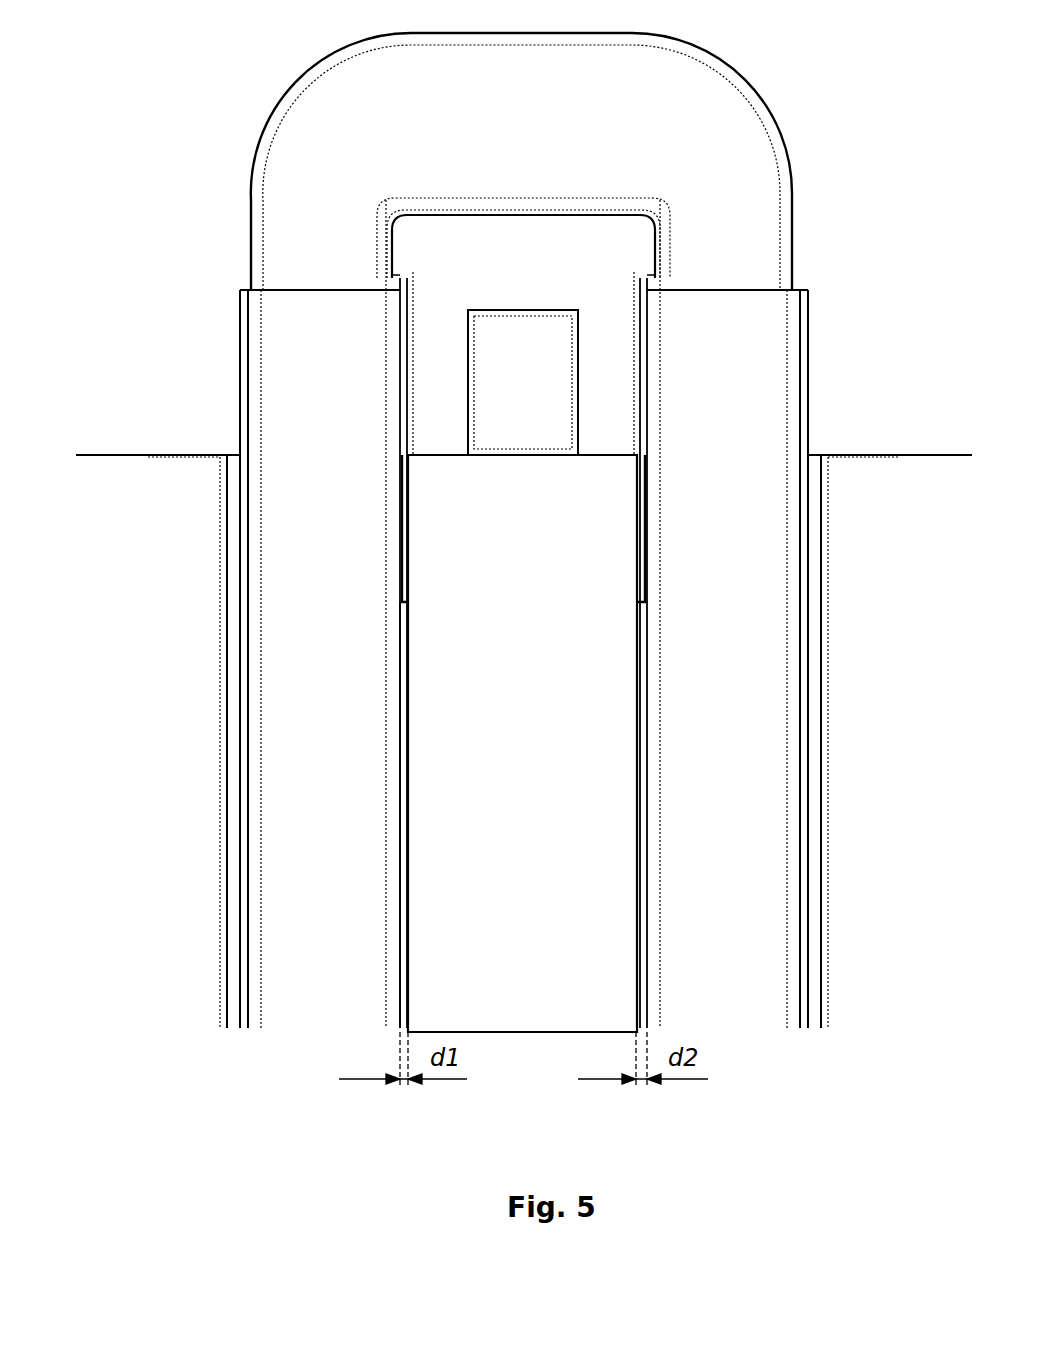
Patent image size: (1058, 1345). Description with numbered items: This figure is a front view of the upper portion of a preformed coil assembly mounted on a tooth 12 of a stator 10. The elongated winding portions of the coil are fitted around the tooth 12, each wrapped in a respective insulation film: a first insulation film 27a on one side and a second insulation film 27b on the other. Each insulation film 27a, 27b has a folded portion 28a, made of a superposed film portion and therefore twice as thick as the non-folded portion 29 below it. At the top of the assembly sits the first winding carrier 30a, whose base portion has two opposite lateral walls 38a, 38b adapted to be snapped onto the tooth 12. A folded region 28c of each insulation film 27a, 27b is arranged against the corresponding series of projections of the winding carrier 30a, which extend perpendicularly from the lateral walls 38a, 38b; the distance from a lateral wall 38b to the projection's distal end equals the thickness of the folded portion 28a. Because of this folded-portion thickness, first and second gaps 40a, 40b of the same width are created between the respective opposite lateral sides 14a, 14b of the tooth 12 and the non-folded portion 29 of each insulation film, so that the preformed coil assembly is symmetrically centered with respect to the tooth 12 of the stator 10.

The stator 10 is at (100, 415).
The tooth 12 is at (497, 733).
The first lateral side of the tooth 14a is at (408, 658).
The second lateral side of the tooth 14b is at (637, 630).
The first insulation film 27a is at (393, 410).
The second insulation film 27b is at (652, 380).
The upper folded portion 28a is at (404, 354).
The folded region 28c is at (400, 272).
The non-folded portion 29 is at (402, 775).
The first winding carrier 30a is at (575, 255).
The first lateral wall 38a is at (414, 308).
The second lateral wall 38b is at (638, 302).
The first gap 40a is at (405, 878).
The second gap 40b is at (642, 688).